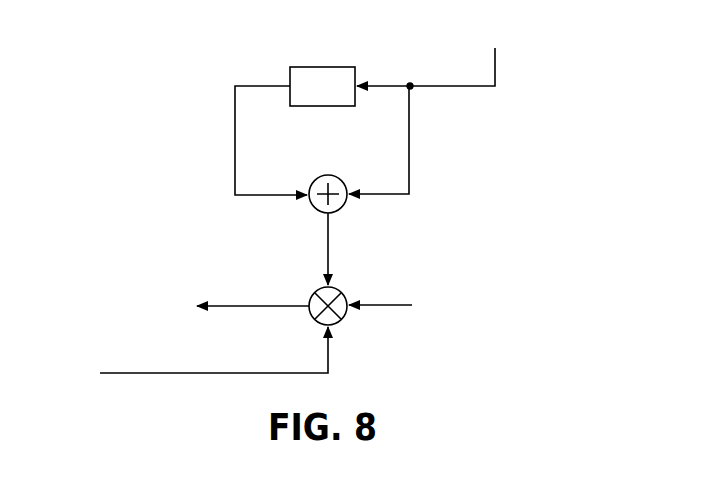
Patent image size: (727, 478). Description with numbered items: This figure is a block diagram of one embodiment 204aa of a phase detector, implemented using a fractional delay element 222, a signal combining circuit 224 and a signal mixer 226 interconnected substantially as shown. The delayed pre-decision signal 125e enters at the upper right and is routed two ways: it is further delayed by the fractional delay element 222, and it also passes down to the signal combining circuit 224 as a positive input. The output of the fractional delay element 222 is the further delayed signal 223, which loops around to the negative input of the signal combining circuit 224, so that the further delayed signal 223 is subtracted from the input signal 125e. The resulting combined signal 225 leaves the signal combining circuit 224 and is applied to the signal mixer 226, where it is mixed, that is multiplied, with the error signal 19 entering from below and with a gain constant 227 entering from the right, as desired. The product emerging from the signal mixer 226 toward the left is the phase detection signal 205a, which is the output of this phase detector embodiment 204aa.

The fractional delay element 222 is at (317, 66).
The delayed pre-decision signal 125e is at (497, 73).
The further delayed signal 223 is at (232, 125).
The signal combining circuit 224 is at (331, 175).
The combined signal 225 is at (330, 238).
The signal mixer 226 is at (315, 290).
The phase detection signal 205a is at (245, 303).
The gain constant 227 is at (392, 302).
The error signal 19 is at (153, 372).
The phase detector embodiment 204aa is at (174, 215).